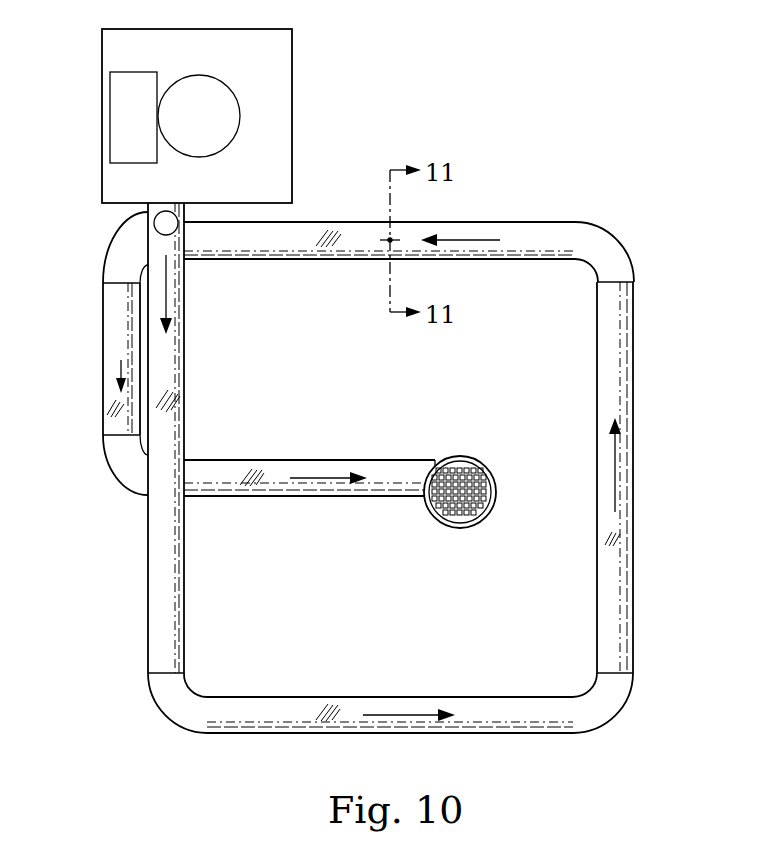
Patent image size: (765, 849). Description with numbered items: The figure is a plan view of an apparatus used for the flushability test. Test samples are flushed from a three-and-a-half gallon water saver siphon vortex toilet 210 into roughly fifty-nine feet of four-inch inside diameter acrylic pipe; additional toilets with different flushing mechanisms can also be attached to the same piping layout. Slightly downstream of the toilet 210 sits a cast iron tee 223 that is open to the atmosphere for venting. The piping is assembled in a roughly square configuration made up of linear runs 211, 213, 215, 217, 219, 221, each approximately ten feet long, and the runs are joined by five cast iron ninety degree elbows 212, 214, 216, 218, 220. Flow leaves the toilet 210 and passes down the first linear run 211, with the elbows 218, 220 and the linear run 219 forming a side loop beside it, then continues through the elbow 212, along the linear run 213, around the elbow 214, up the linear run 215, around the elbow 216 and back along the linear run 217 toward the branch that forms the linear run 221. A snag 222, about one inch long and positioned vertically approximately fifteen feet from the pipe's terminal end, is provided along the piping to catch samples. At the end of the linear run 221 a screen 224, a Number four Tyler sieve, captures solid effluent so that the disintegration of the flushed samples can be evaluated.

The water saver siphon vortex toilet 210 is at (230, 103).
The linear run 211 is at (156, 558).
The cast iron ninety degree elbow 212 is at (172, 708).
The linear run 213 is at (392, 722).
The cast iron ninety degree elbow 214 is at (608, 708).
The linear run 215 is at (624, 467).
The cast iron ninety degree elbow 216 is at (610, 247).
The linear run 217 is at (457, 224).
The cast iron ninety degree elbow 218 is at (120, 248).
The linear run 219 is at (112, 318).
The cast iron ninety degree elbow 220 is at (128, 473).
The linear run 221 is at (326, 464).
The snag 222 is at (388, 244).
The cast iron tee 223 is at (154, 218).
The screen 224 is at (480, 458).